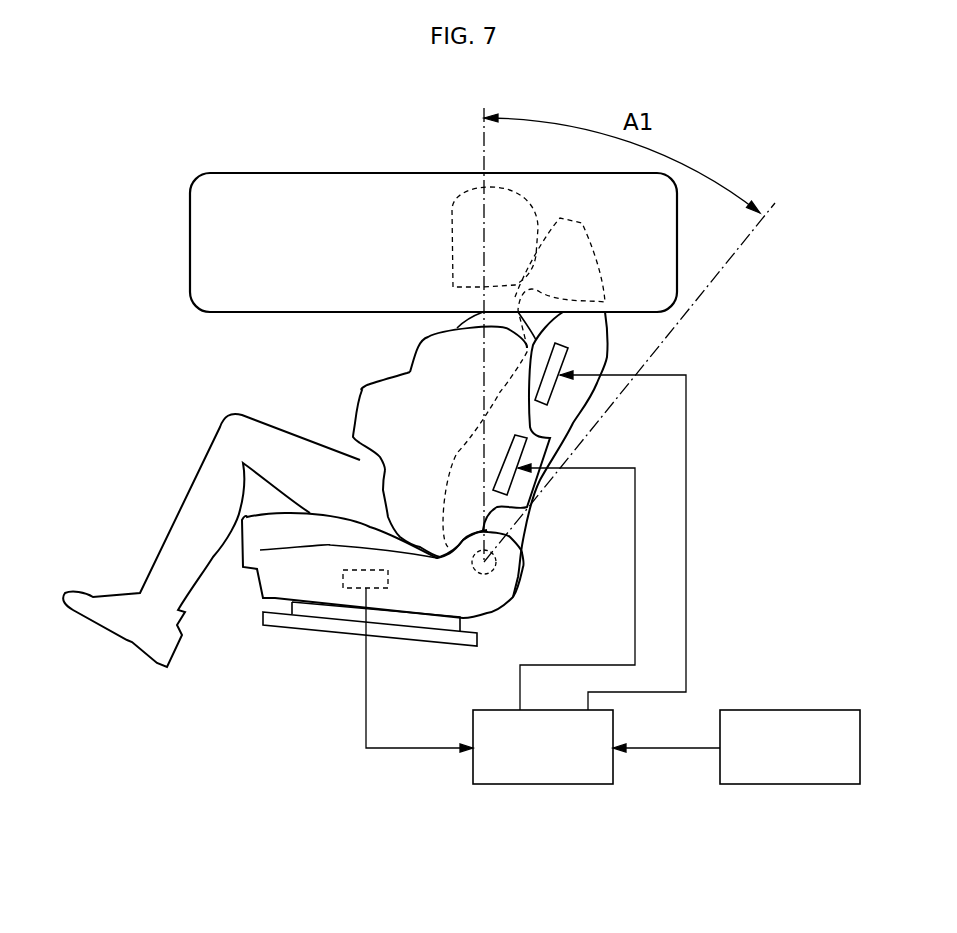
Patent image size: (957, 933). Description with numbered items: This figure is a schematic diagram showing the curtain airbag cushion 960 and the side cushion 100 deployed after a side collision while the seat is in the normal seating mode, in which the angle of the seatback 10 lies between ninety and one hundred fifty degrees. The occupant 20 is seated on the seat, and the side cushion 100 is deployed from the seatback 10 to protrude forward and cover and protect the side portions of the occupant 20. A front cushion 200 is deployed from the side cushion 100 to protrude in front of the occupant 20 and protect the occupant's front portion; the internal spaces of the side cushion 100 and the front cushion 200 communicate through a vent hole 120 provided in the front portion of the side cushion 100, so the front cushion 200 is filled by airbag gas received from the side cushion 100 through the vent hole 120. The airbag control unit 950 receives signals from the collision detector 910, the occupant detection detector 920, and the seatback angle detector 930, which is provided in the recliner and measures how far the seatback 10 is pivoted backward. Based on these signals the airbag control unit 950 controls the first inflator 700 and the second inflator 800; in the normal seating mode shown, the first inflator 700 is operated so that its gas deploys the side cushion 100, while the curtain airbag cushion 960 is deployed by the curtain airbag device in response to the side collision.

The seatback 10 is at (590, 335).
The occupant 20 is at (200, 502).
The side cushion 100 is at (311, 400).
The vent hole 120 is at (392, 427).
The front cushion 200 is at (365, 387).
The first inflator 700 is at (517, 455).
The second inflator 800 is at (560, 362).
The collision detector 910 is at (790, 784).
The occupant detection detector 920 is at (342, 585).
The seatback angle detector 930 is at (497, 570).
The airbag control unit (ACU) 950 is at (543, 784).
The curtain airbag cushion 960 is at (283, 172).